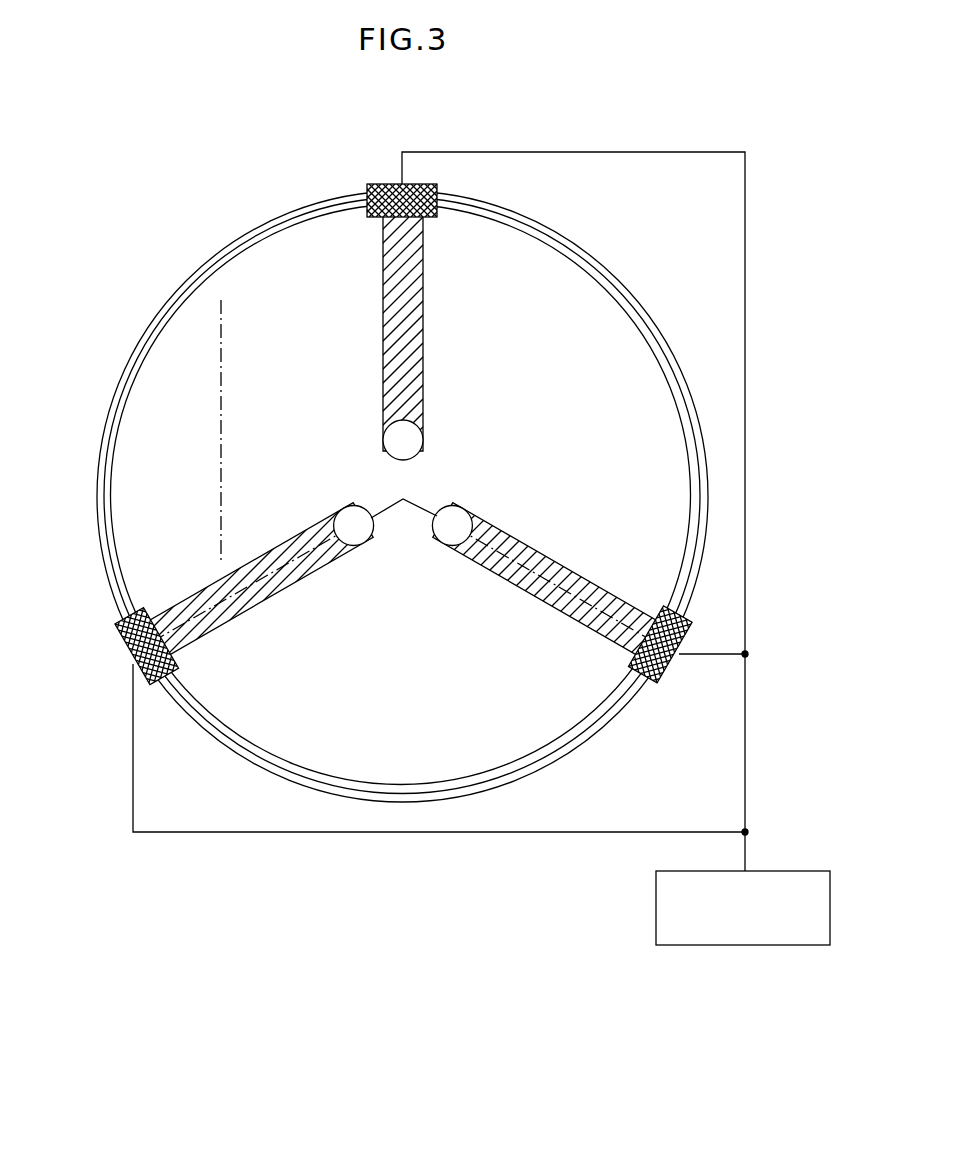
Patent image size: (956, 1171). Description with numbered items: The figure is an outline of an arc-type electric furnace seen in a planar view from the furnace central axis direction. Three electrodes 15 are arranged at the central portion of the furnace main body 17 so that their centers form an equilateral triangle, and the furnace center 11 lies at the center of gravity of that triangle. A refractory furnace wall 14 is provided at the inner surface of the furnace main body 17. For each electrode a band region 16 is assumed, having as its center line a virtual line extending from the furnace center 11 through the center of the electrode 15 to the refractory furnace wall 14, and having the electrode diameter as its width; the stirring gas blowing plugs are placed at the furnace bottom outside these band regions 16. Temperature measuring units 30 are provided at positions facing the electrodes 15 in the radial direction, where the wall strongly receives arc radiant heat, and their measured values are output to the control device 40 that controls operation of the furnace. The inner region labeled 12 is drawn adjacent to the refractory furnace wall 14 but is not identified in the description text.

The rotation center 11 is at (329, 659).
The rotary disc 12 is at (170, 440).
The annular frame 14 is at (578, 258).
The roller 15 is at (457, 512).
The arm 16 is at (400, 312).
The outer peripheral surface 17 is at (98, 488).
The actuator 30 is at (385, 184).
The control device 40 is at (745, 946).